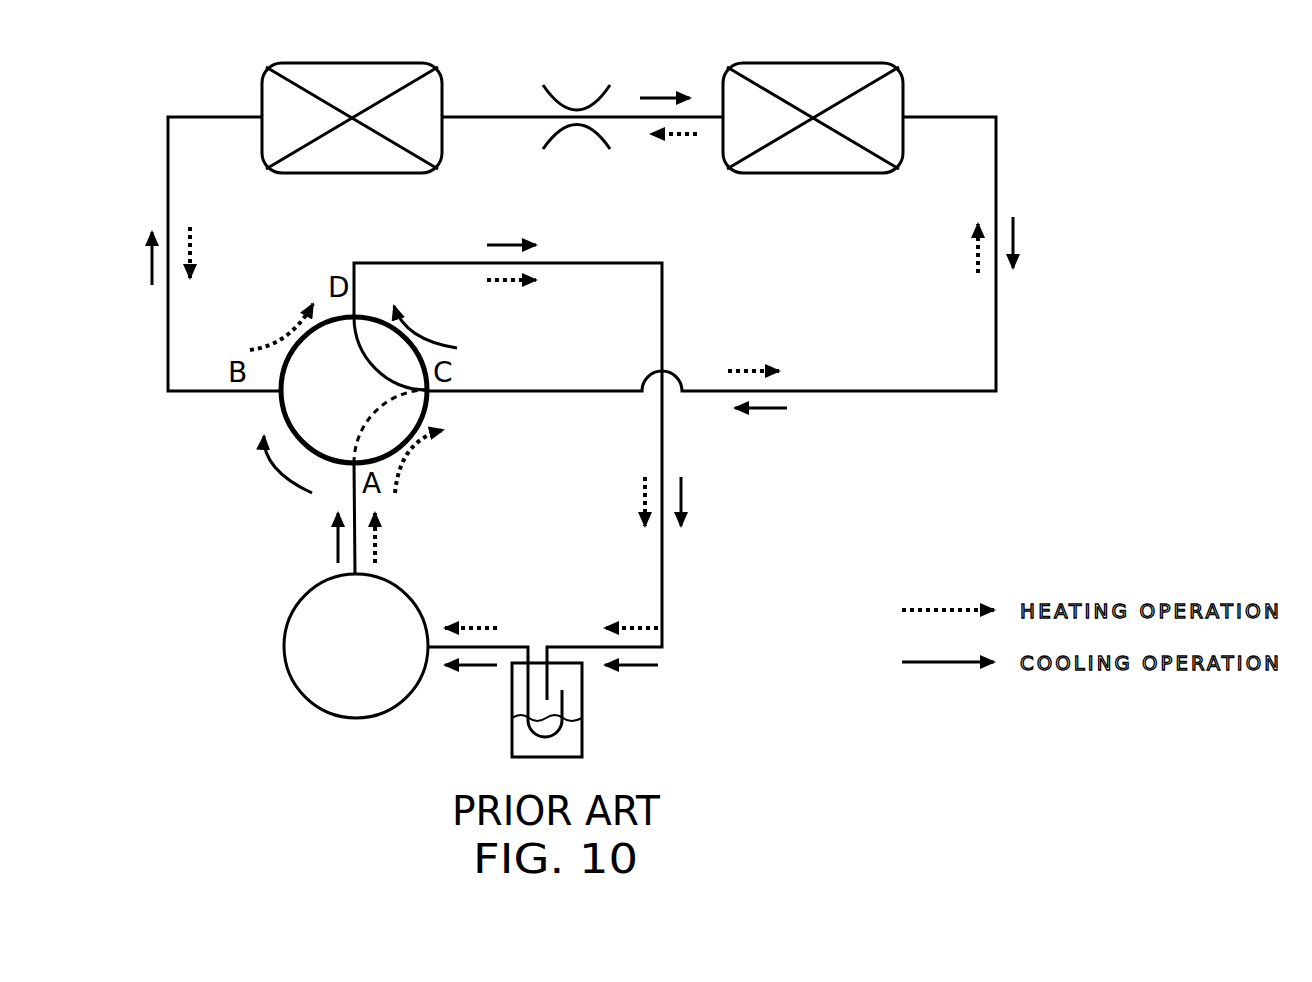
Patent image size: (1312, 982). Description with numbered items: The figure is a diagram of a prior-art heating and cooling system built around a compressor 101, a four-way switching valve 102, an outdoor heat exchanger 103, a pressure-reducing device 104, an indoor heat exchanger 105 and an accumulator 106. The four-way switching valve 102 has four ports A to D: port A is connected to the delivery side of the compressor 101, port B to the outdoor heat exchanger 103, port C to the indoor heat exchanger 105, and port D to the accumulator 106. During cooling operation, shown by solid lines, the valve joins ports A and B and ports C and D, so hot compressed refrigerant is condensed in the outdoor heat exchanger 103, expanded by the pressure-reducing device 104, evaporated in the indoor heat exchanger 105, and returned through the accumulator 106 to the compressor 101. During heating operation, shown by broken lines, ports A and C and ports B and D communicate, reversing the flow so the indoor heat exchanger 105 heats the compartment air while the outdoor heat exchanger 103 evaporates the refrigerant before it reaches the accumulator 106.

The compressor 101 is at (410, 593).
The four-way switching valve 102 is at (427, 400).
The outdoor heat exchanger 103 is at (338, 63).
The pressure-reducing device 104 is at (577, 108).
The indoor heat exchanger 105 is at (805, 63).
The accumulator 106 is at (582, 700).